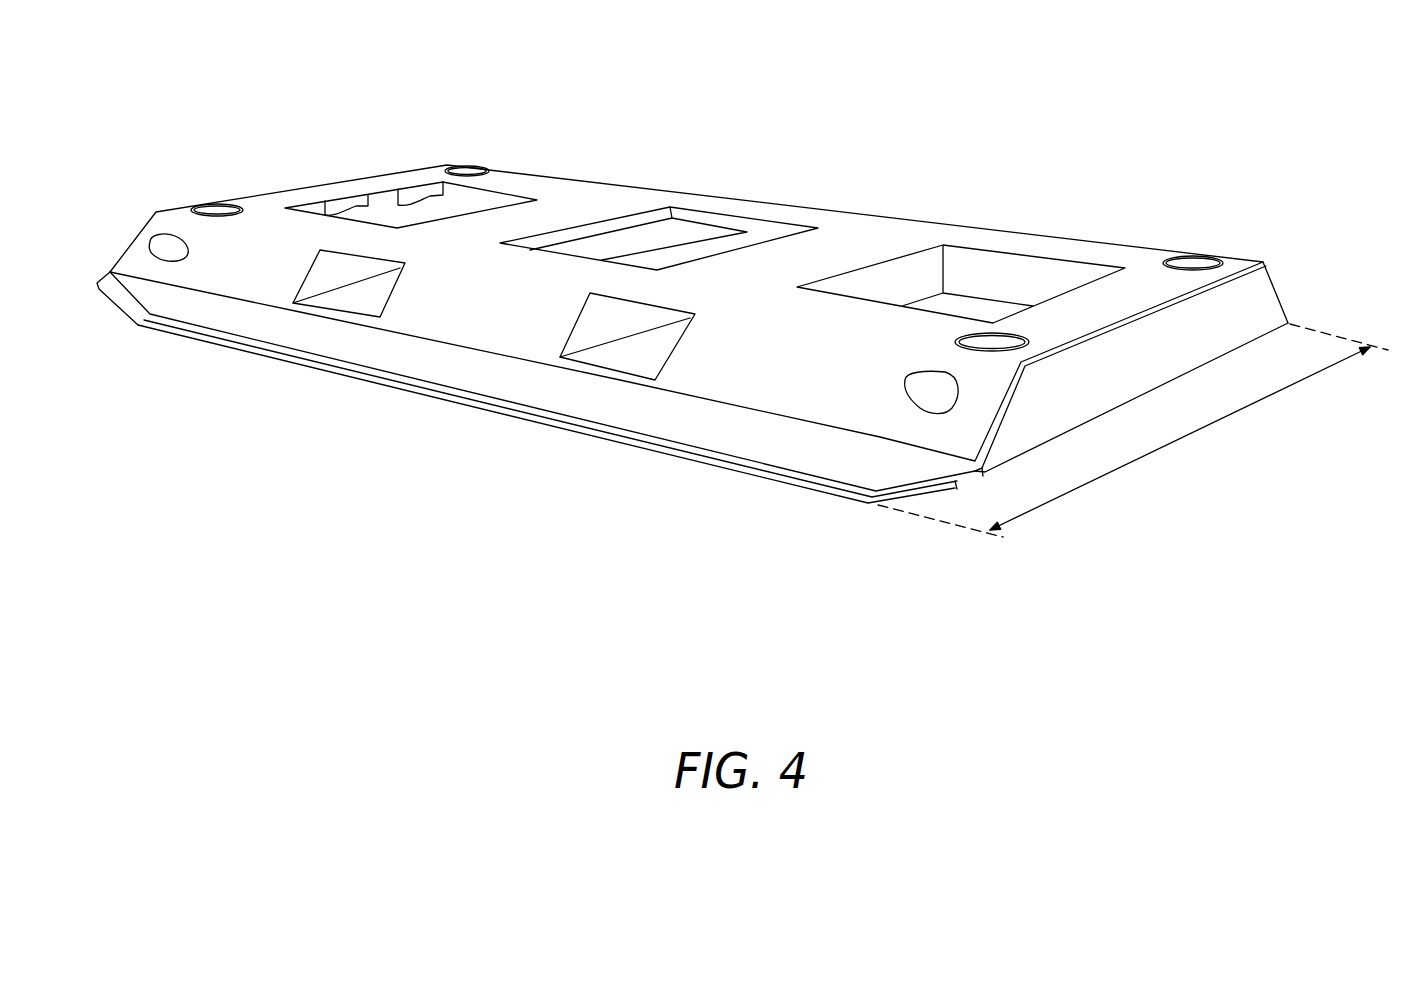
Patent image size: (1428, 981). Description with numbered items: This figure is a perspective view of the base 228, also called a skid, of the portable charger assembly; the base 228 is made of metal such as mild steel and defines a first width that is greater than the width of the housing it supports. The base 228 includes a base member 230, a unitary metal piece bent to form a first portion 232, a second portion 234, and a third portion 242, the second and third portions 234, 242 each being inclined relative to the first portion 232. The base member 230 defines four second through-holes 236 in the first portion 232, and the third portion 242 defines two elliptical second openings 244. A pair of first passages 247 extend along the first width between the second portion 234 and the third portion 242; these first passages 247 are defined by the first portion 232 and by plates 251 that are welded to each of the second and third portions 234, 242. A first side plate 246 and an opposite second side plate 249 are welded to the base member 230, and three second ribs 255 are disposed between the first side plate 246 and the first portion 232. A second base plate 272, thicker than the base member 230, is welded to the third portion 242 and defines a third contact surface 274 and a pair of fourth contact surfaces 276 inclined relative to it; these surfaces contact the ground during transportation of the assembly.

The base 228 is at (1205, 172).
The base member 230 is at (818, 188).
The first portion 232 is at (614, 206).
The second portion 234 is at (1280, 291).
The second through-holes 236 is at (217, 212).
The third portion 242 is at (254, 276).
The second openings 244 is at (167, 245).
The first side plate 246 is at (386, 203).
The first passages 247 is at (618, 358).
The second side plate 249 is at (1182, 330).
The plates 251 is at (340, 297).
The second ribs 255 is at (342, 208).
The second base plate 272 is at (744, 490).
The third contact surface 274 is at (684, 460).
The fourth contact surfaces 276 is at (100, 297).